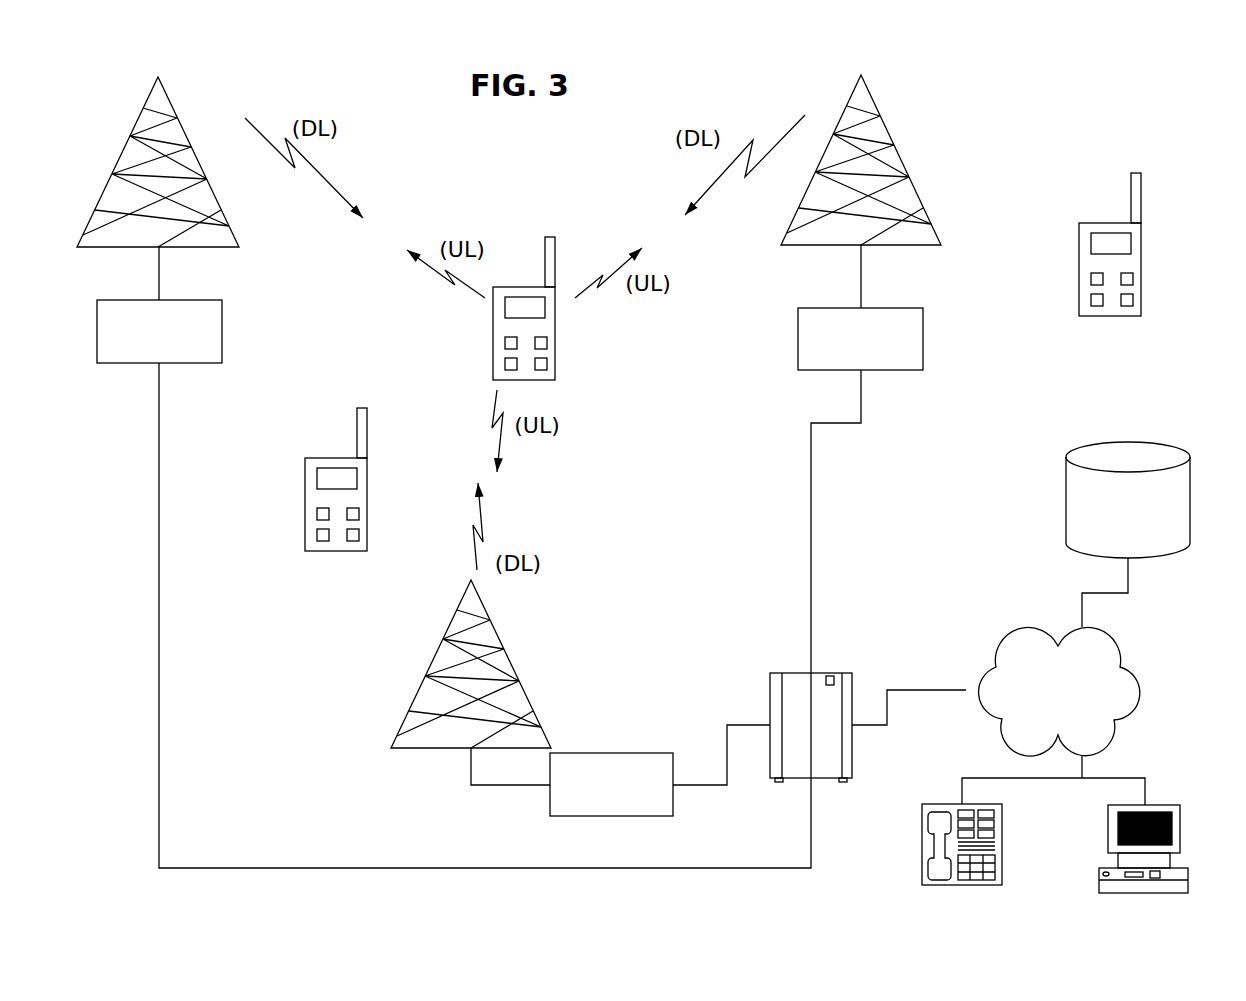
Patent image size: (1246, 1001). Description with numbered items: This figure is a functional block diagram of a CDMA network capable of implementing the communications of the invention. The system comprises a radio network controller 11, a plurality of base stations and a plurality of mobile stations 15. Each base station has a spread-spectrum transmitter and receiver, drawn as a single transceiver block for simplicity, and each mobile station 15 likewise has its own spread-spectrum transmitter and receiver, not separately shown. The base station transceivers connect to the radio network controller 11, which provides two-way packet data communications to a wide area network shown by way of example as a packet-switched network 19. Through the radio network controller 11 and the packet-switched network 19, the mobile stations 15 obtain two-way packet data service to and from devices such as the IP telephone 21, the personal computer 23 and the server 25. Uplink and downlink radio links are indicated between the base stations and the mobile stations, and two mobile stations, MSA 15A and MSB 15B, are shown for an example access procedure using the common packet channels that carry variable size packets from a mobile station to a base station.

The radio network controller 11 is at (782, 673).
The mobile station 15 is at (1141, 283).
The mobile station MSA 15A is at (555, 345).
The mobile station MSB 15B is at (367, 518).
The packet-switched network 19 is at (1028, 628).
The IP telephone 21 is at (942, 810).
The personal computer 23 is at (1160, 805).
The server 25 is at (1163, 455).